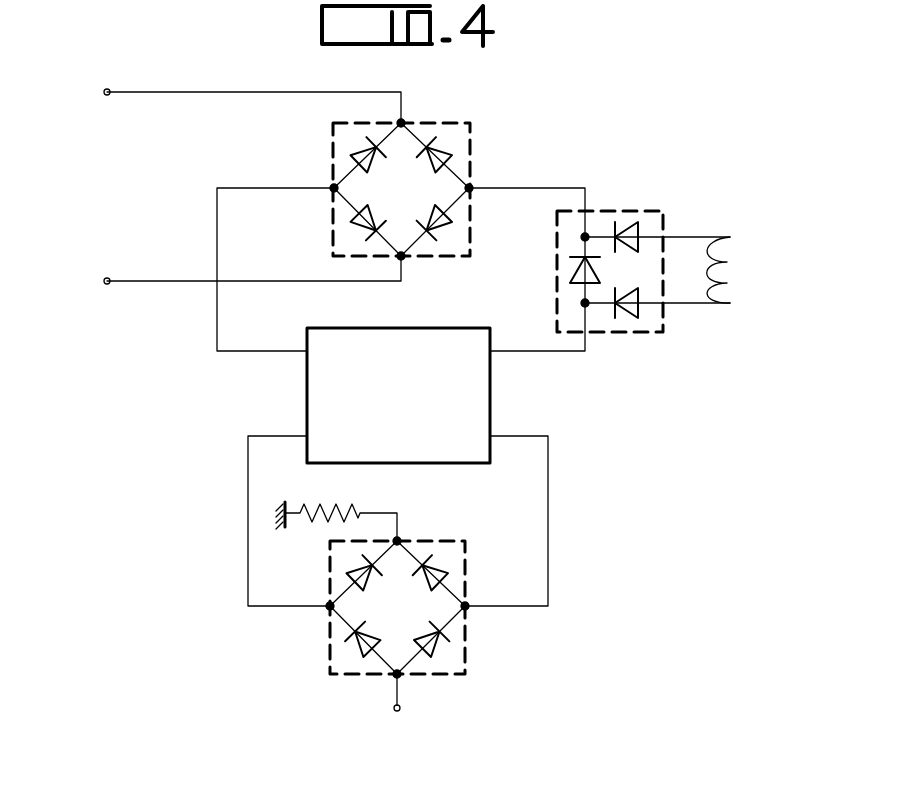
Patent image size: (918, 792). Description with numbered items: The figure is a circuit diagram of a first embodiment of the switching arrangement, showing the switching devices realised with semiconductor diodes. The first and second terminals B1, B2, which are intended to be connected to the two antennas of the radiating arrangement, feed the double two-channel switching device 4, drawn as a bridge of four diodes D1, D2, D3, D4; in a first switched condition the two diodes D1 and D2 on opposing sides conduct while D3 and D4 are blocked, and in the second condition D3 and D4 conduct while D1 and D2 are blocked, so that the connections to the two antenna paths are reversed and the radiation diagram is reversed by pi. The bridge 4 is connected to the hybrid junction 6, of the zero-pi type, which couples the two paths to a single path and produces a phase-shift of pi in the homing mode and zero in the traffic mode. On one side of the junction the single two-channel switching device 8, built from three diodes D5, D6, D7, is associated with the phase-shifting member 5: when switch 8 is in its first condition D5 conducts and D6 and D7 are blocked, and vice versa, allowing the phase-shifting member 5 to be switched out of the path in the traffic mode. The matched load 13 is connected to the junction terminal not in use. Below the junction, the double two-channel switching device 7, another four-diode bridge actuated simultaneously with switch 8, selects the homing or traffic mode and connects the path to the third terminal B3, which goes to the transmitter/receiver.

The first terminal B1 is at (107, 95).
The second terminal B2 is at (107, 284).
The third terminal B3 is at (400, 710).
The double two-channel switching device 4 is at (404, 171).
The diode D1 is at (356, 148).
The diode D2 is at (452, 228).
The diode D3 is at (452, 147).
The diode D4 is at (355, 228).
The diode D5 is at (577, 267).
The diode D6 is at (630, 220).
The diode D7 is at (628, 318).
The phase-shifting member 5 is at (737, 266).
The hybrid junction 6 is at (343, 328).
The double two-channel switching device 7 is at (436, 541).
The single two-channel switching device 8 is at (589, 277).
The matched load 13 is at (339, 506).